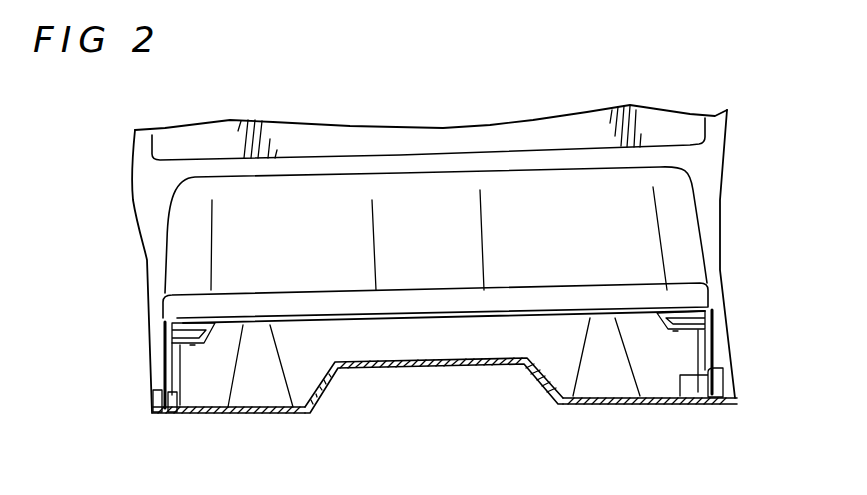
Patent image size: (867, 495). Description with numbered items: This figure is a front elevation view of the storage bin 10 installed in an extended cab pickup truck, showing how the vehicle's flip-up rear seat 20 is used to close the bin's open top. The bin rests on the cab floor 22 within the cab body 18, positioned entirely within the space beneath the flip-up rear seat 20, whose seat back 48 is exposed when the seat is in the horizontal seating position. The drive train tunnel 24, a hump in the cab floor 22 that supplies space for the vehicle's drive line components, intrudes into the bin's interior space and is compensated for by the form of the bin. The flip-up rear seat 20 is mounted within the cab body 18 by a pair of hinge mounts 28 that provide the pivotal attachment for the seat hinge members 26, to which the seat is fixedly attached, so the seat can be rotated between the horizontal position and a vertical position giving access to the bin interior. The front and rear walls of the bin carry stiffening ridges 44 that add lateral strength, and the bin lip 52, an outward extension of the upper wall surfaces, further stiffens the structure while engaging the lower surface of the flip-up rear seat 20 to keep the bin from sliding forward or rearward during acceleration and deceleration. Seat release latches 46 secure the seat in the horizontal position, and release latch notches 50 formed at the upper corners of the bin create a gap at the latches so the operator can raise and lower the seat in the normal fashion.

The storage bin 10 is at (330, 310).
The cab body 18 is at (147, 197).
The flip-up rear seat 20 is at (180, 308).
The cab floor 22 is at (247, 418).
The drive train tunnel 24 is at (390, 372).
The seat hinge member 26 is at (163, 362).
The hinge mount 28 is at (155, 398).
The stiffening ridge 44 is at (277, 392).
The seat release latch 46 is at (167, 328).
The seat back 48 is at (437, 198).
The release latch notch 50 is at (192, 347).
The bin lip 52 is at (528, 310).